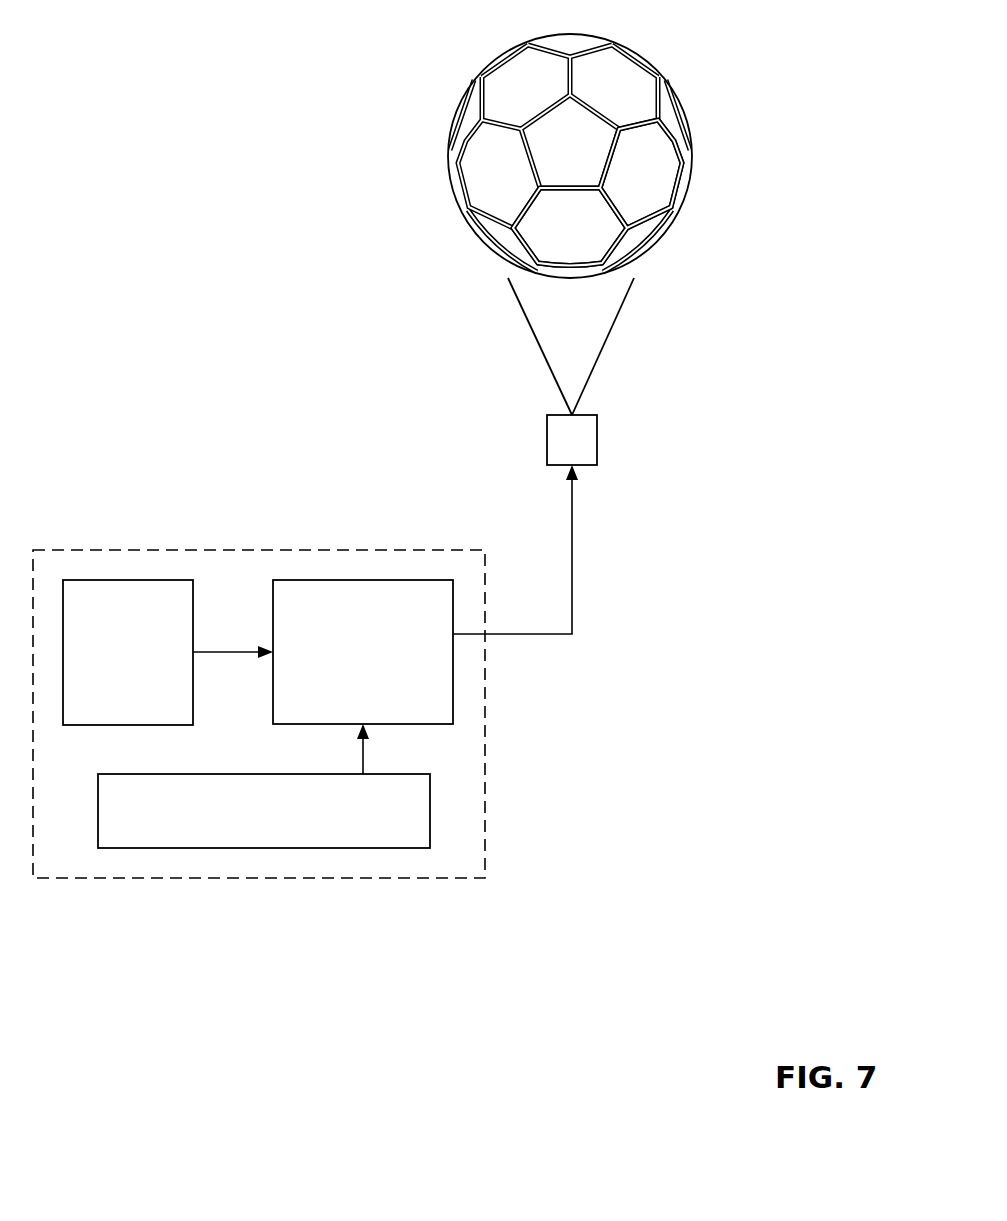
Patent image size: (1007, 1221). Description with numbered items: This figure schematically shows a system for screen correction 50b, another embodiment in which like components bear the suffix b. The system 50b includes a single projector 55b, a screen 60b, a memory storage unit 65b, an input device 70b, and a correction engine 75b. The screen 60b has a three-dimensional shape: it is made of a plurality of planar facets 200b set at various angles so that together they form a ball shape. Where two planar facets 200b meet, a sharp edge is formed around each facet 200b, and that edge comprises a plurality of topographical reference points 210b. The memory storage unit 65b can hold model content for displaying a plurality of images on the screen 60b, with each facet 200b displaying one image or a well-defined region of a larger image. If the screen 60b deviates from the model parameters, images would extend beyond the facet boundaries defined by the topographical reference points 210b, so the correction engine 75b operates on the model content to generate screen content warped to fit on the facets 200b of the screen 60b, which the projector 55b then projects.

The system for screen correction 50b is at (226, 146).
The projector 55b is at (570, 440).
The screen 60b is at (690, 75).
The memory storage unit 65b is at (100, 668).
The input device 70b is at (237, 827).
The correction engine 75b is at (335, 668).
The planar facet 200b is at (606, 237).
The topographical reference points 210b is at (672, 138).